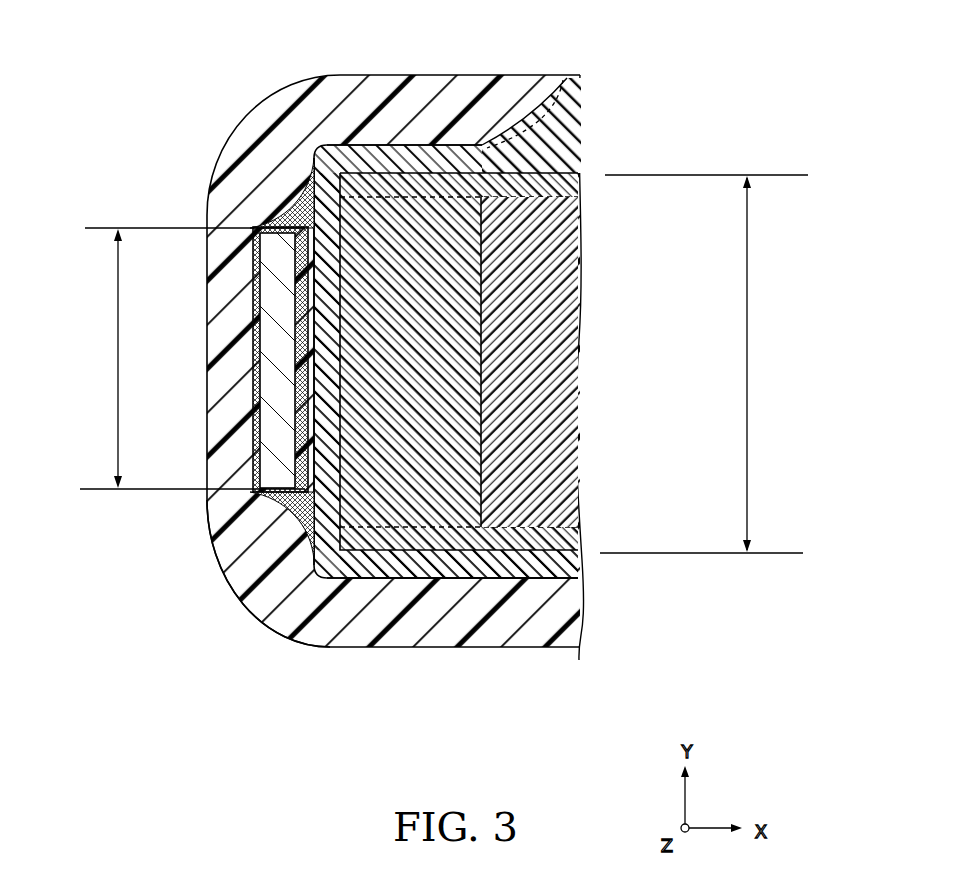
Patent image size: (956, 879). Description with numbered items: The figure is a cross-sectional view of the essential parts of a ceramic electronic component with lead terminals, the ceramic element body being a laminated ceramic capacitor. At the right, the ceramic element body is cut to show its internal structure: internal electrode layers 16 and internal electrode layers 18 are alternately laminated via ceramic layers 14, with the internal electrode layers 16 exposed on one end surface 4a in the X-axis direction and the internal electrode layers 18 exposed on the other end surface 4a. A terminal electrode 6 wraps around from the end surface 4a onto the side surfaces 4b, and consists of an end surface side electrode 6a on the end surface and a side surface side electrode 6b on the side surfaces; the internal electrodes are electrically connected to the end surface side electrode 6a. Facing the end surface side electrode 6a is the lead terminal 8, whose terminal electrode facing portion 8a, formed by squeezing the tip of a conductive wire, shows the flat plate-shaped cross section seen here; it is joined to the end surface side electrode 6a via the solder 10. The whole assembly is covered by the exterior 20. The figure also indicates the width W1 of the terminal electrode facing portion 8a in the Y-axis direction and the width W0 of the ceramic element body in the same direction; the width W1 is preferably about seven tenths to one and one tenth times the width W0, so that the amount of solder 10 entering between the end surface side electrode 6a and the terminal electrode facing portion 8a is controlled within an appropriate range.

The exterior 20 is at (274, 122).
The terminal electrode 6 is at (318, 148).
The end surface side electrode 6a is at (262, 567).
The side surface side electrode 6b is at (417, 143).
The internal electrode layer 16 is at (564, 80).
The solder 10 is at (296, 201).
The lead terminal 8 is at (253, 278).
The terminal electrode facing portion 8a is at (273, 328).
The end surface 4a is at (325, 385).
The side surface 4b is at (528, 565).
The ceramic layer 14 is at (338, 552).
The internal electrode layer 18 is at (553, 342).
The width of terminal electrode facing portion W1 is at (186, 358).
The width of ceramic element body W0 is at (704, 364).